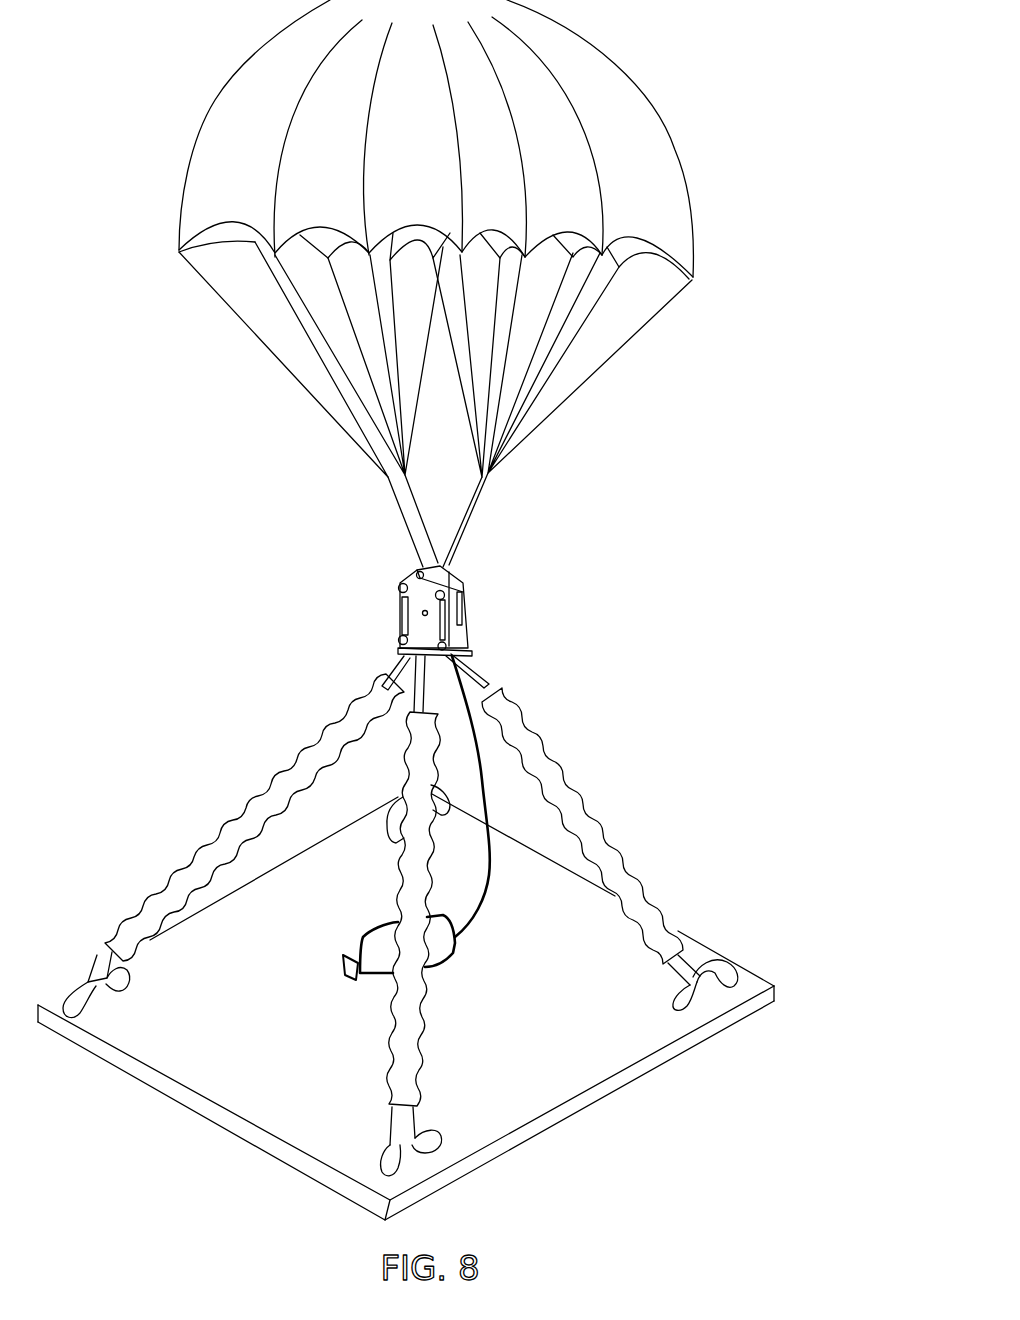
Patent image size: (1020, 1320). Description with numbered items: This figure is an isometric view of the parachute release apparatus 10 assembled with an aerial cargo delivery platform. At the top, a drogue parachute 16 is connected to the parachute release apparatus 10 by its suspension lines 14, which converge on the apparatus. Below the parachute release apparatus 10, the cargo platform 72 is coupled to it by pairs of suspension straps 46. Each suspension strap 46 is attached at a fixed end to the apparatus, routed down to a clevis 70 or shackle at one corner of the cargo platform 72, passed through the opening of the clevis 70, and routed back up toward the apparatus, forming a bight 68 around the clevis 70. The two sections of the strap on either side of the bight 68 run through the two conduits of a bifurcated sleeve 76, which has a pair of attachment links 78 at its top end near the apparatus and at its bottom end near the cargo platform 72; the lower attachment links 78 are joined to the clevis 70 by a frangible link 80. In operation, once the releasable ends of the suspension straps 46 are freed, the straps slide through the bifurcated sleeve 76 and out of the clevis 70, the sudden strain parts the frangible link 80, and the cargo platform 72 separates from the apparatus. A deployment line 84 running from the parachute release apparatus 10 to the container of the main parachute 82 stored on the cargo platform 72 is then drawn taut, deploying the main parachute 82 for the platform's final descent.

The drogue parachute 16 is at (570, 153).
The suspension lines 14 is at (548, 383).
The parachute release apparatus 10 is at (427, 603).
The suspension strap 46 is at (483, 690).
The bifurcated sleeve 76 is at (587, 837).
The attachment links 78 is at (233, 846).
The frangible link 80 is at (415, 944).
The clevis 70 is at (713, 970).
The bight 68 is at (692, 978).
The deployment line 84 is at (482, 792).
The main parachute 82 is at (380, 957).
The cargo platform 72 is at (280, 1017).